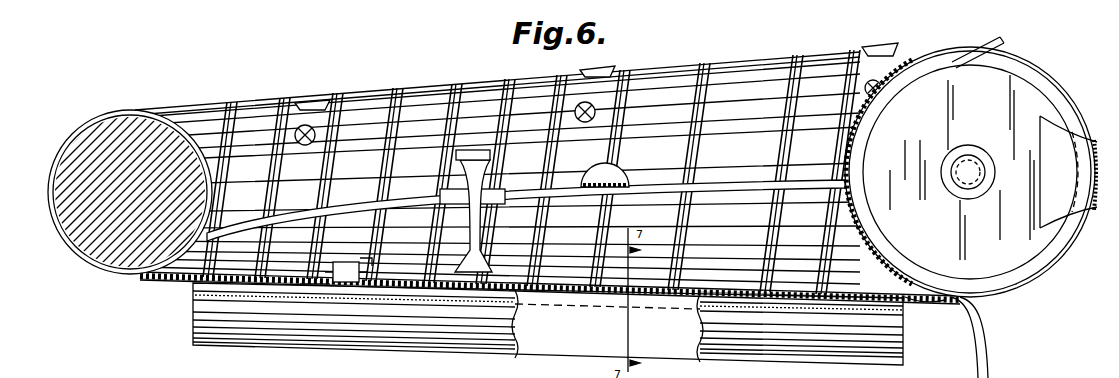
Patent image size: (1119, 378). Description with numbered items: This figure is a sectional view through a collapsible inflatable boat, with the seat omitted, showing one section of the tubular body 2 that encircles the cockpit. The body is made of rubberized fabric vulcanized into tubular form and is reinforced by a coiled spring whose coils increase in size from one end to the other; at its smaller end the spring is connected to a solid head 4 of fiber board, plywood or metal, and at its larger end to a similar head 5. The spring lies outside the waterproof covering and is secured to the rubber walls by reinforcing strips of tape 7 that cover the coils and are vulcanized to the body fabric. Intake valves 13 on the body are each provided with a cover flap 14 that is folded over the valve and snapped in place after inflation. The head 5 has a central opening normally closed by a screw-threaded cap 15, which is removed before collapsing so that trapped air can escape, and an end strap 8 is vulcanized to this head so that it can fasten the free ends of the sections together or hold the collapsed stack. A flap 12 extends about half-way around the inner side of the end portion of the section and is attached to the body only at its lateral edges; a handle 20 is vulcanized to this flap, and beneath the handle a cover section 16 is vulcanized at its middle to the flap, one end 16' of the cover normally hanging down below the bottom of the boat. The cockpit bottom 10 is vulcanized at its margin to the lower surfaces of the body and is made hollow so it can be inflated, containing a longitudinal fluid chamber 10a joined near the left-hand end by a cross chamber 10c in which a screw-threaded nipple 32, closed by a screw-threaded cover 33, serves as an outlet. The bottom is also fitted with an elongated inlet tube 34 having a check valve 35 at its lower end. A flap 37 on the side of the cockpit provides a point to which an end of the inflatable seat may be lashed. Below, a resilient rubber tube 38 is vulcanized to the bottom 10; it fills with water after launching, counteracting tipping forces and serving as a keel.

The tubular body 2 is at (717, 56).
The head 4 is at (52, 196).
The head 5 is at (1020, 247).
The reinforcing strip of tape 7 is at (758, 143).
The end strap 8 is at (1096, 148).
The cockpit bottom 10 is at (192, 280).
The fluid chamber 10a is at (720, 273).
The cross chamber 10c is at (300, 284).
The flap 12 is at (918, 300).
The intake valve 13 is at (318, 140).
The cover flap 14 is at (330, 100).
The screw-threaded cap 15 is at (968, 167).
The cover section 16 is at (557, 199).
The end of cover section 16' is at (992, 337).
The handle 20 is at (853, 153).
The nipple 32 is at (337, 263).
The screw-threaded cover 33 is at (372, 258).
The inlet tube 34 is at (486, 238).
The check valve 35 is at (487, 256).
The flap 37 is at (627, 170).
The rubber tube 38 is at (495, 337).